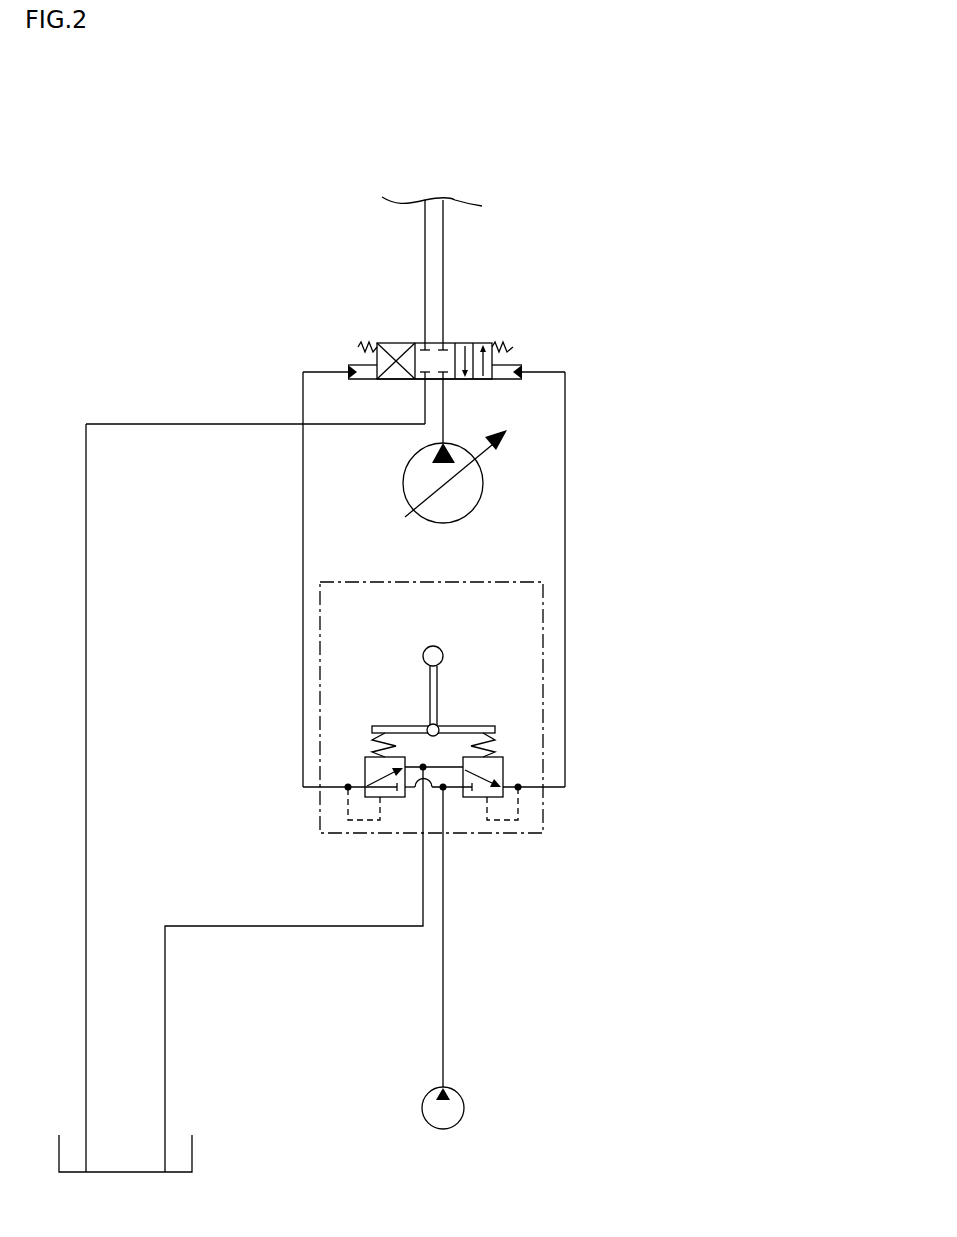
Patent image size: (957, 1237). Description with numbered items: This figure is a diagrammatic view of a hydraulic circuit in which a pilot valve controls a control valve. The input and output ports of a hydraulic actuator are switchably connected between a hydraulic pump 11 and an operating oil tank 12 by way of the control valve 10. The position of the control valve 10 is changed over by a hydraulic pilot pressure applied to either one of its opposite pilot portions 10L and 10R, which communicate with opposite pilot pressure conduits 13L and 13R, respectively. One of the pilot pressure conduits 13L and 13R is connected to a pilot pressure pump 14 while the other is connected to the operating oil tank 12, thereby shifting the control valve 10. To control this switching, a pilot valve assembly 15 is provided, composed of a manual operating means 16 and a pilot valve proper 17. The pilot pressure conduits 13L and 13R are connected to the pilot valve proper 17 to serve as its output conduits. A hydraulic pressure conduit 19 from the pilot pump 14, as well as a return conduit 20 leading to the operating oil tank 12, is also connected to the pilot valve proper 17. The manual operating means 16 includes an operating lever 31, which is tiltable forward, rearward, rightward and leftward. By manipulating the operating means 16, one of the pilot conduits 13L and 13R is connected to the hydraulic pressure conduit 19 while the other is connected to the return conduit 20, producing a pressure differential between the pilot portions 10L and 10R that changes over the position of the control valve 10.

The control valve 10 is at (476, 326).
The pilot portion 10L is at (350, 368).
The pilot portion 10R is at (522, 366).
The hydraulic pump 11 is at (483, 483).
The operating oil tank 12 is at (192, 1148).
The pilot pressure conduit 13L is at (303, 542).
The pilot pressure conduit 13R is at (565, 537).
The pilot pressure pump 14 is at (464, 1108).
The pilot valve assembly 15 is at (320, 728).
The manual operating means 16 is at (394, 721).
The pilot valve proper 17 is at (475, 805).
The hydraulic pressure conduit 19 is at (443, 1017).
The return conduit 20 is at (307, 926).
The operating lever 31 is at (431, 697).